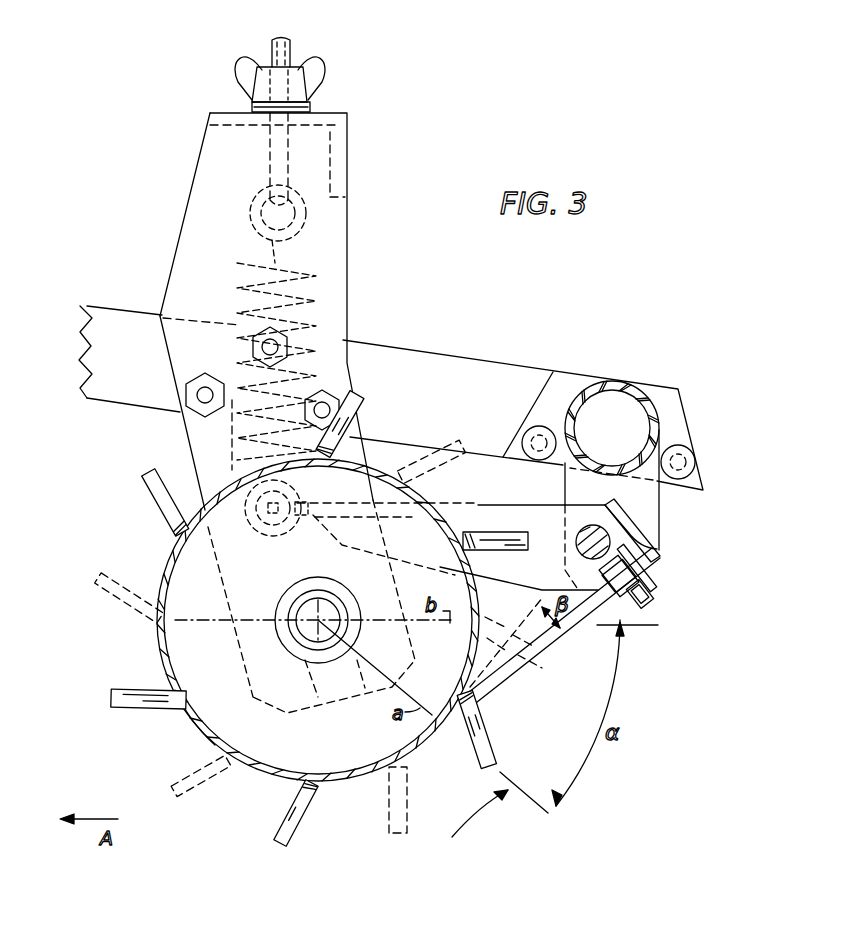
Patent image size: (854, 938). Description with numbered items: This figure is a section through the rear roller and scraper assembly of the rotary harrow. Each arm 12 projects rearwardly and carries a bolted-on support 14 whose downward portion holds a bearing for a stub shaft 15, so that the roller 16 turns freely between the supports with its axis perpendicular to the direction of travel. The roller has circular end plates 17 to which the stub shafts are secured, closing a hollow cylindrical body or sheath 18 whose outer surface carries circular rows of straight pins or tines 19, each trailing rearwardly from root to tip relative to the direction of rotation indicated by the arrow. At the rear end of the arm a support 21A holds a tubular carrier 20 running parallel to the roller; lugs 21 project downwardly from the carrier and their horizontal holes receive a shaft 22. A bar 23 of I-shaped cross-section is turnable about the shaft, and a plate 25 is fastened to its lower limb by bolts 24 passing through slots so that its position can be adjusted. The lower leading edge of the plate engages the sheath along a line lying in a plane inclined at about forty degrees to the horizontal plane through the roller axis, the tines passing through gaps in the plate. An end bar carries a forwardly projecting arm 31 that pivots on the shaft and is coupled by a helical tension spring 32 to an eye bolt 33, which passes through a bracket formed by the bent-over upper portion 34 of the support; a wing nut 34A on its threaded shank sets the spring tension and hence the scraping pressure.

The arm 12 is at (445, 358).
The support 14 is at (187, 430).
The stub shaft 15 is at (308, 605).
The roller 16 is at (267, 778).
The end plate 17 is at (180, 647).
The body or sheath 18 is at (190, 725).
The pin or tine 19 is at (155, 513).
The tubular carrier 20 is at (637, 388).
The lug 21 is at (657, 513).
The support 21A is at (572, 380).
The shaft 22 is at (578, 537).
The bar 23 is at (650, 540).
The bolt 24 is at (648, 603).
The plate 25 is at (510, 693).
The arm 31 is at (475, 508).
The helical tension spring 32 is at (310, 268).
The eye bolt 33 is at (272, 40).
The upper portion 34 is at (190, 198).
The wing nut 34A is at (318, 75).